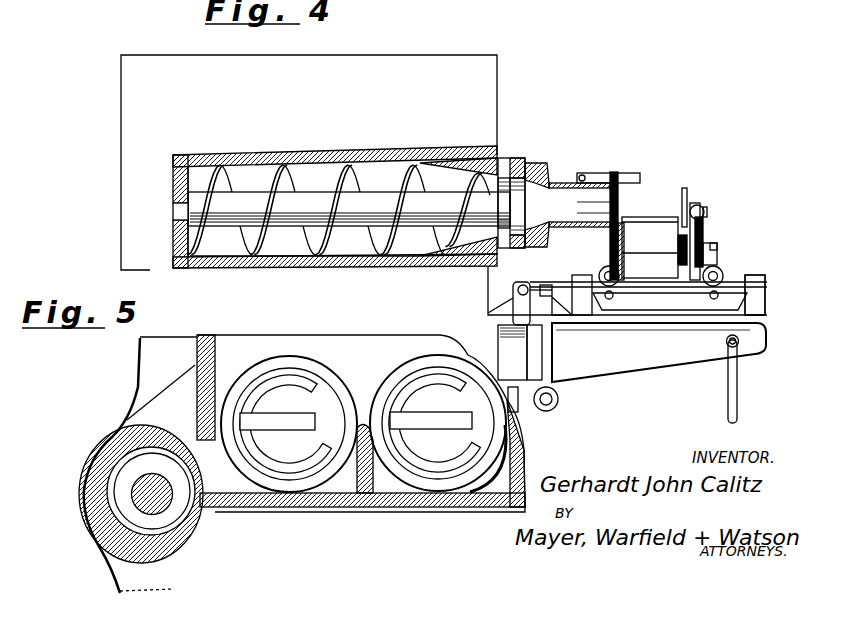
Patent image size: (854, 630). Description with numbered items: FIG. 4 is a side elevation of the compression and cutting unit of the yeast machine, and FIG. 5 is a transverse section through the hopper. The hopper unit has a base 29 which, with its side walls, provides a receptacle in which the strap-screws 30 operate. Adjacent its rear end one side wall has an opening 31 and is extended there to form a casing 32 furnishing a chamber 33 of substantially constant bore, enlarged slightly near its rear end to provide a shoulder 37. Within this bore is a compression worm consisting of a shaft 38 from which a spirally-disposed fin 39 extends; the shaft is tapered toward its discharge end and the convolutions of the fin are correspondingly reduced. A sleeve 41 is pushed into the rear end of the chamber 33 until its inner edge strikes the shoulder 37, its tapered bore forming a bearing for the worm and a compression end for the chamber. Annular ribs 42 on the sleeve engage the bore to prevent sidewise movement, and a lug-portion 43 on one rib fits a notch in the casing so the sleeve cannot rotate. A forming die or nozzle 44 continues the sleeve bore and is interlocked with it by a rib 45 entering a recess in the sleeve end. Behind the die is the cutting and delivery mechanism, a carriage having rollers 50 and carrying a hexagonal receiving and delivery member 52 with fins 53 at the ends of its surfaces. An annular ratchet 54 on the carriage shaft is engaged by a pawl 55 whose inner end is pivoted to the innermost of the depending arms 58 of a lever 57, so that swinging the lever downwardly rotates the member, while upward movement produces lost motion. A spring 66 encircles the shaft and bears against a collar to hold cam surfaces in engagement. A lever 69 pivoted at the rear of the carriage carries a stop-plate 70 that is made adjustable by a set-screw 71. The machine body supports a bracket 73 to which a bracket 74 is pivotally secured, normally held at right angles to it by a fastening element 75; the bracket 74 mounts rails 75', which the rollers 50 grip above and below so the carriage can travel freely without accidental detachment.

In FIG. 5, the base 29 is at (382, 500).
In FIG. 5, the strap-screws 30 is at (393, 383).
In FIG. 5, the opening 31 is at (215, 497).
In FIG. 5, the casing 32 is at (96, 526).
In FIG. 4, the chamber 33 is at (235, 257).
In FIG. 5, the chamber 33 is at (138, 536).
In FIG. 4, the shoulder 37 is at (400, 158).
In FIG. 4, the shaft 38 is at (172, 211).
In FIG. 5, the shaft 38 is at (147, 485).
In FIG. 4, the spirally-disposed fin 39 is at (277, 160).
In FIG. 5, the spirally-disposed fin 39 is at (122, 474).
In FIG. 4, the sleeve 41 is at (490, 156).
In FIG. 4, the annular ribs 42 is at (457, 162).
In FIG. 4, the lug-portion 43 is at (490, 155).
In FIG. 4, the forming die or nozzle 44 is at (573, 177).
In FIG. 4, the rib 45 is at (540, 176).
In FIG. 4, the rollers 50 is at (722, 268).
In FIG. 4, the receiving and delivery member 52 is at (650, 247).
In FIG. 4, the fins 53 is at (641, 223).
In FIG. 4, the annular ratchet 54 is at (630, 258).
In FIG. 4, the pawl 55 is at (628, 292).
In FIG. 4, the lever 57 is at (614, 175).
In FIG. 4, the depending arms 58 is at (619, 194).
In FIG. 4, the spring 66 is at (710, 252).
In FIG. 4, the lever 69 is at (703, 228).
In FIG. 4, the stop-plate 70 is at (684, 196).
In FIG. 4, the set-screw 71 is at (706, 217).
In FIG. 4, the bracket 73 is at (534, 402).
In FIG. 4, the bracket 74 is at (548, 378).
In FIG. 4, the fastening element 75 is at (534, 291).
In FIG. 4, the rails 75' is at (761, 282).